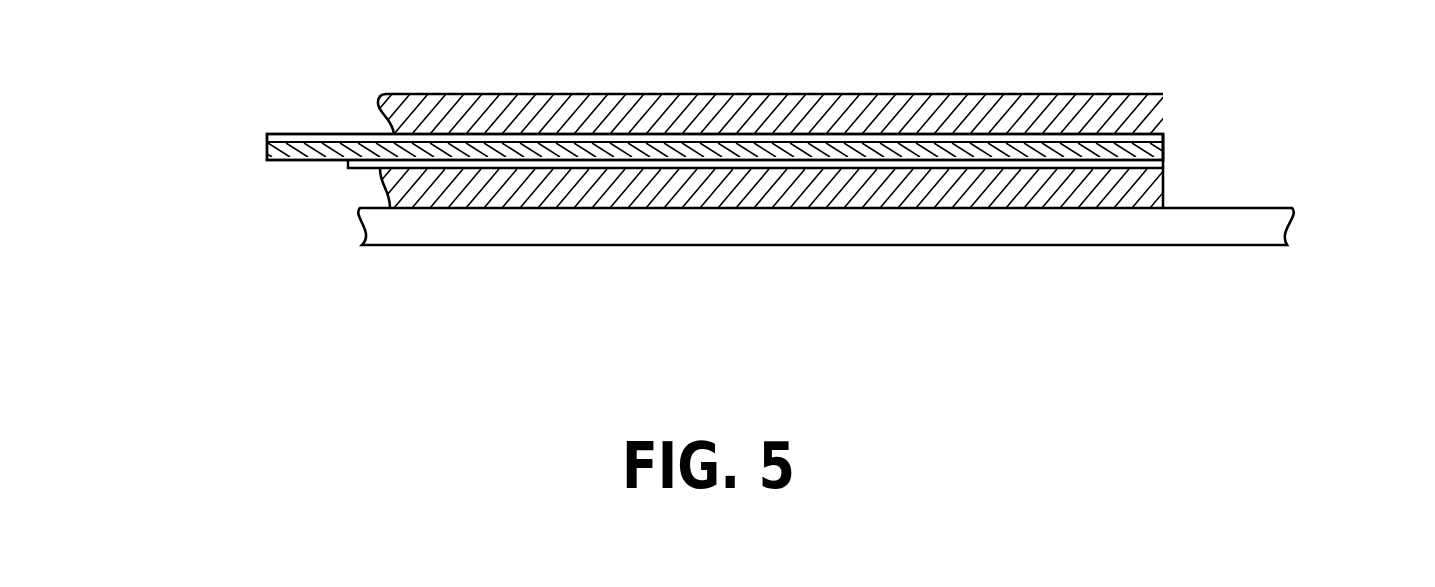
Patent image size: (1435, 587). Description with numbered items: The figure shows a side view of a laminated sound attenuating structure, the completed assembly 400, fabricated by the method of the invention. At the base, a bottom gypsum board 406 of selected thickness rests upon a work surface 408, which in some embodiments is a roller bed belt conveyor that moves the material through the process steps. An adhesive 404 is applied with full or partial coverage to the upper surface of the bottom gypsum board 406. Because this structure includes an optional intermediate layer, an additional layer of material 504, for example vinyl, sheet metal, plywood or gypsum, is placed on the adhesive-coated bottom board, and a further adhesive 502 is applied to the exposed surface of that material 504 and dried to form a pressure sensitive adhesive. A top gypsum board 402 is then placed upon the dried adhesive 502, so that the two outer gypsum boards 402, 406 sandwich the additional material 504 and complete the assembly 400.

The assembly 400 is at (145, 70).
The top gypsum board 402 is at (1103, 91).
The adhesive 404 is at (1167, 165).
The bottom gypsum board 406 is at (1167, 190).
The work surface 408 is at (1072, 253).
The adhesive 502 is at (285, 129).
The additional layer of material 504 is at (300, 162).